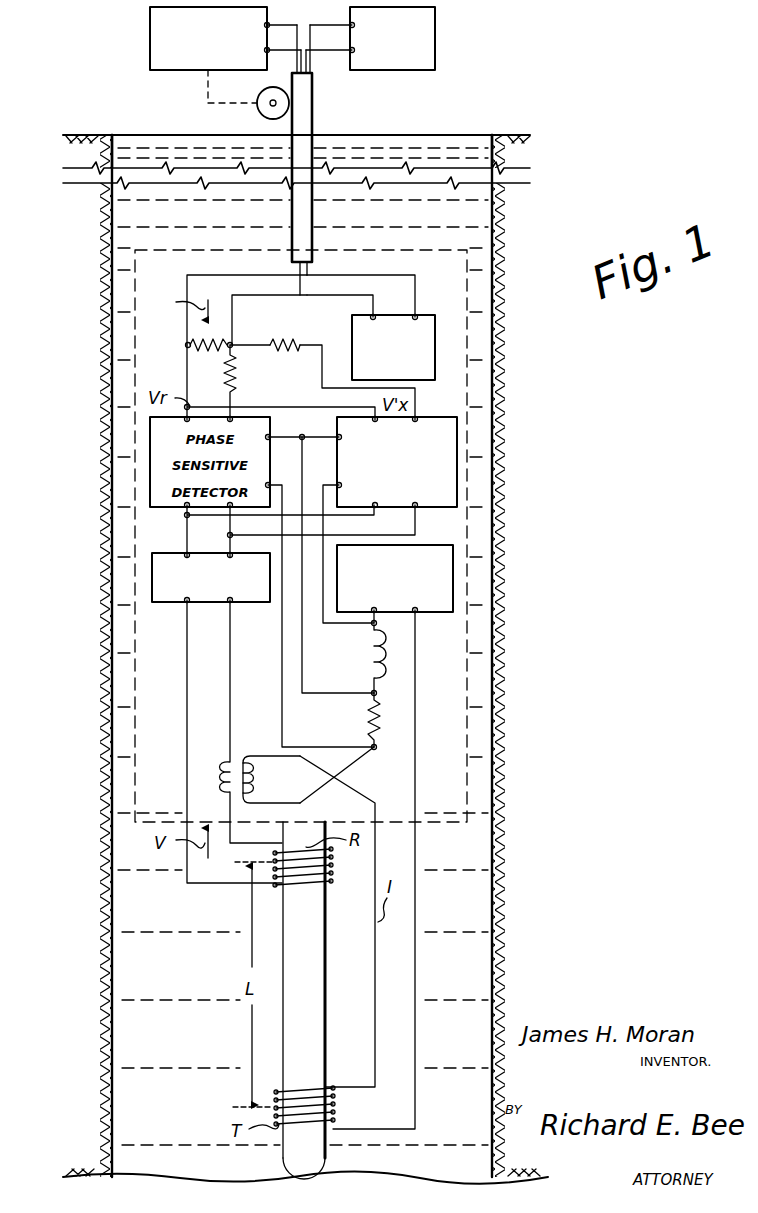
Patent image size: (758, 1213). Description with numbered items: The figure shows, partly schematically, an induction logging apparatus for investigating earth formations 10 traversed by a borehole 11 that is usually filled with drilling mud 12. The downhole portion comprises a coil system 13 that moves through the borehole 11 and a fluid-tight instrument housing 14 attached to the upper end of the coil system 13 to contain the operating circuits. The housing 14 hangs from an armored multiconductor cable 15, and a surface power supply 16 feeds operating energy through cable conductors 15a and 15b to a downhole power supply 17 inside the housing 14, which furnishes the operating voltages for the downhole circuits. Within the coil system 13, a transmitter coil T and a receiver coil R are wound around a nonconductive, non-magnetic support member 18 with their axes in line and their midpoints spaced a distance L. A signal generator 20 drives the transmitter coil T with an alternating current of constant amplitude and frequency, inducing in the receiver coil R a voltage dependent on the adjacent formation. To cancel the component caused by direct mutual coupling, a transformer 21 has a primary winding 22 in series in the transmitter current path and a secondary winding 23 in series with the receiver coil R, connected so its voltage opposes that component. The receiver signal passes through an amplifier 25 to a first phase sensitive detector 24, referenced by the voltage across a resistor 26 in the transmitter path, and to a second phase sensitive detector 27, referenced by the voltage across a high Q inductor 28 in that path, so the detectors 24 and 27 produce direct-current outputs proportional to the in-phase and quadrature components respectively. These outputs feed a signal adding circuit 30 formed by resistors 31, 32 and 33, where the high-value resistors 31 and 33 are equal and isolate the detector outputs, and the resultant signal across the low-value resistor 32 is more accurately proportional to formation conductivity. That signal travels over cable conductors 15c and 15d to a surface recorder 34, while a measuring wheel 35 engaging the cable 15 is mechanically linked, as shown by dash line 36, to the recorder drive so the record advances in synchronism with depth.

The earth formations 10 is at (532, 235).
The borehole 11 is at (488, 145).
The drilling liquid or drilling mud 12 is at (405, 225).
The coil system 13 is at (327, 1032).
The instrument housing 14 is at (443, 822).
The armored multiconductor cable 15 is at (312, 116).
The cable conductor 15a is at (340, 25).
The cable conductor 15b is at (337, 50).
The cable conductor 15c is at (265, 25).
The cable conductor 15d is at (267, 52).
The power supply 16 is at (435, 36).
The downhole power supply 17 is at (432, 315).
The support member 18 is at (319, 943).
The signal generator 20 is at (437, 612).
The transformer 21 is at (285, 843).
The primary winding 22 is at (256, 780).
The secondary winding 23 is at (226, 783).
The first phase sensitive detector circuit 24 is at (270, 433).
The signal amplifier 25 is at (175, 602).
The resistor 26 is at (368, 720).
The phase sensitive detector circuit 27 is at (440, 417).
The inductor 28 is at (366, 657).
The signal adding circuit 30 is at (274, 379).
The resistor 31 is at (228, 379).
The resistor 32 is at (190, 341).
The resistor 33 is at (290, 337).
The recorder 34 is at (150, 22).
The mechanical measuring wheel 35 is at (257, 108).
The dash line 36 is at (208, 88).